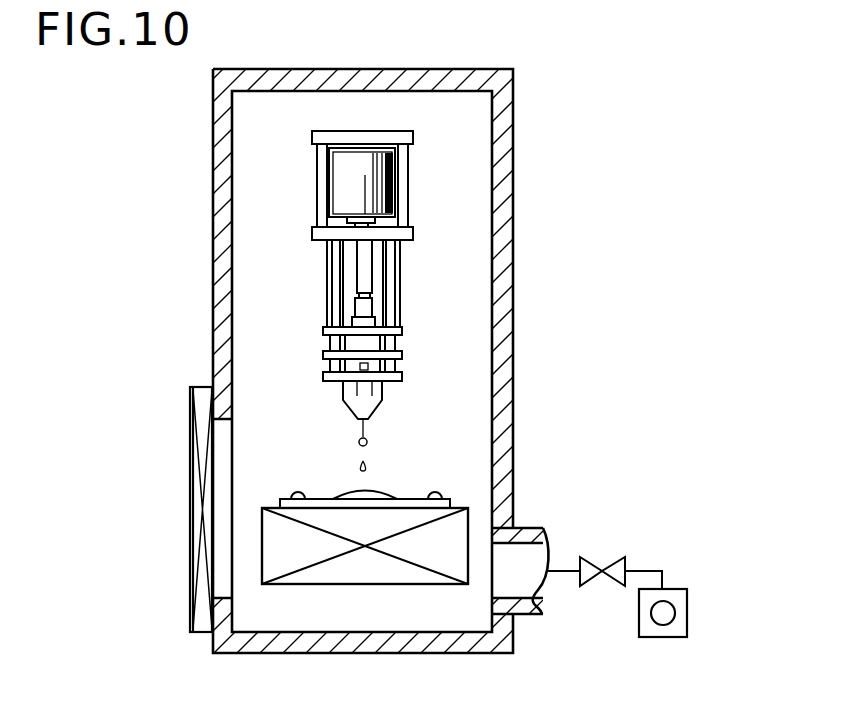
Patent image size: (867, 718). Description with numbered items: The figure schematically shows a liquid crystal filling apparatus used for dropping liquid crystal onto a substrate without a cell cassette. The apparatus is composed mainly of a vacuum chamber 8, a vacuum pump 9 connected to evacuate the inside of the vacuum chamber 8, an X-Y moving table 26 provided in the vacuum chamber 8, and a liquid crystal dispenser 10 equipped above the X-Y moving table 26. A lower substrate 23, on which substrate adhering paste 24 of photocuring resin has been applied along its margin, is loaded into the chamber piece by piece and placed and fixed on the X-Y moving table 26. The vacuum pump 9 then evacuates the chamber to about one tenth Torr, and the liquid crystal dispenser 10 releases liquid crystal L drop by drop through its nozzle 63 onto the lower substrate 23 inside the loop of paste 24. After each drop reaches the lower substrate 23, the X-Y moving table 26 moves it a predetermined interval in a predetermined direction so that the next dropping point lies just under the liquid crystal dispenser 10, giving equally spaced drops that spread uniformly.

The vacuum chamber 8 is at (513, 307).
The vacuum pump 9 is at (687, 600).
The liquid crystal dispenser 10 is at (401, 288).
The nozzle 63 is at (367, 420).
The liquid crystal L is at (360, 491).
The substrate adhering paste 24 is at (297, 492).
The lower substrate 23 is at (373, 499).
The X-Y moving table 26 is at (328, 573).